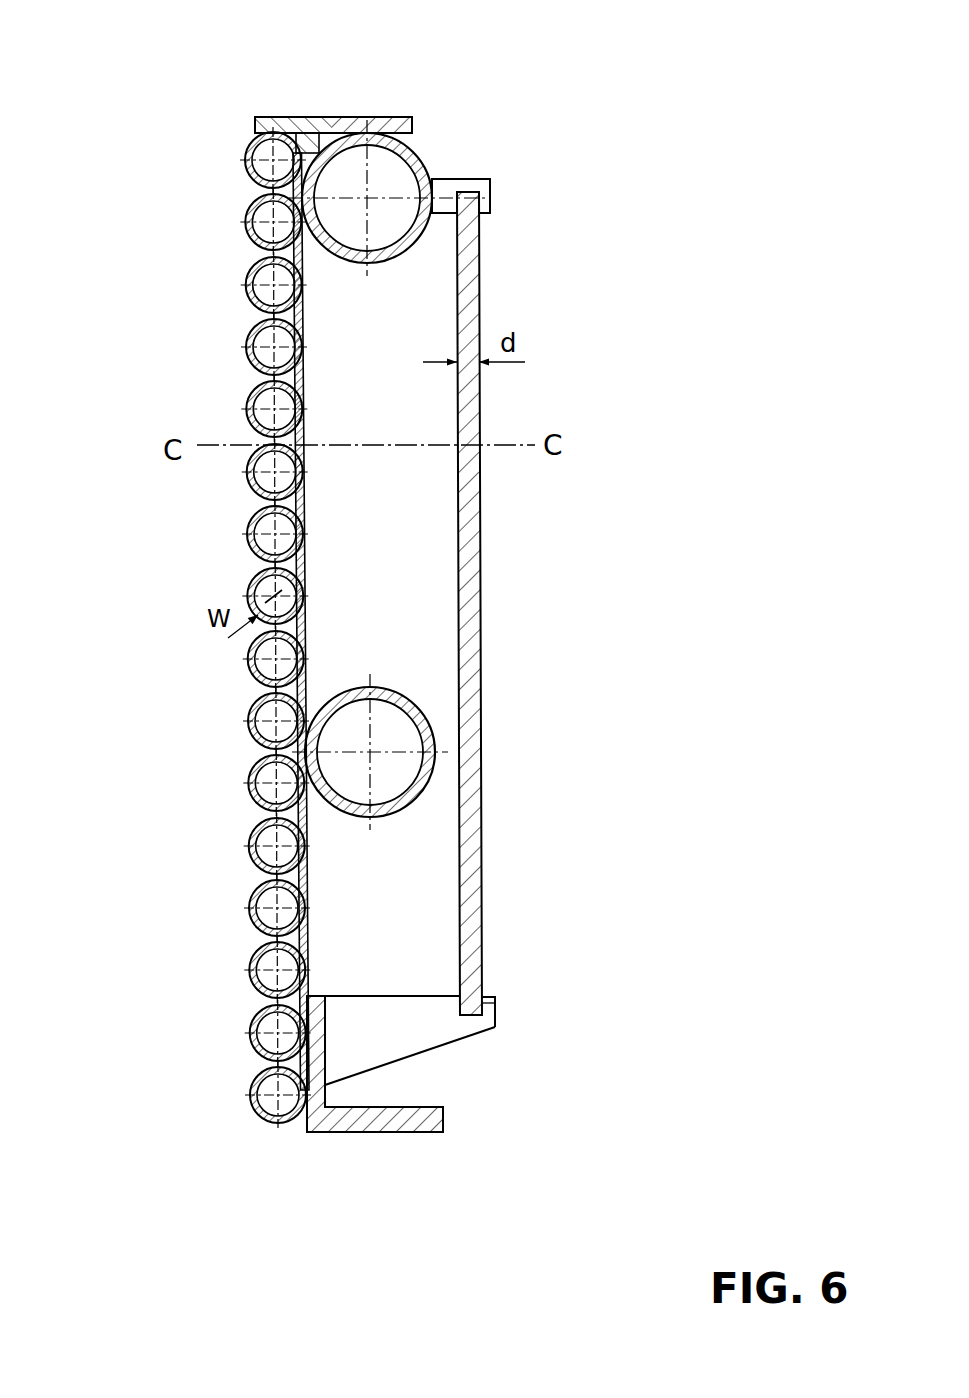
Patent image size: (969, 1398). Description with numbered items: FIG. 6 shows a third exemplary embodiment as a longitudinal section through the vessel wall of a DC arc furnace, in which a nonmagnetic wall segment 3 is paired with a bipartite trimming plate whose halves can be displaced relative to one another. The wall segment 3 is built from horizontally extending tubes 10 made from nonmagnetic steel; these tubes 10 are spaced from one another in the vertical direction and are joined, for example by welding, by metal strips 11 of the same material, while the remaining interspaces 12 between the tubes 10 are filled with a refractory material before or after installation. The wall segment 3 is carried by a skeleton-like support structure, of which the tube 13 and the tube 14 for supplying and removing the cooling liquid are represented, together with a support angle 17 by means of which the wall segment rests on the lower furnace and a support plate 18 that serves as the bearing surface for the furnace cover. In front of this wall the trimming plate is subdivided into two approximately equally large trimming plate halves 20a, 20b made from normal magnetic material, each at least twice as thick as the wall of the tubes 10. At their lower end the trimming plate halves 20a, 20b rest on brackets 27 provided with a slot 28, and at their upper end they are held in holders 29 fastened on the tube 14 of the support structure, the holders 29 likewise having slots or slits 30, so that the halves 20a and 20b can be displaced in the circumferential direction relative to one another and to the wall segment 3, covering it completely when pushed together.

The wall segment 3 is at (143, 685).
The tubes 10 is at (252, 543).
The metal strips 11 is at (305, 622).
The interspaces 12 is at (199, 627).
The tube 13 is at (425, 780).
The tube 14 is at (415, 158).
The support angle 17 is at (370, 1118).
The support plate 18 is at (320, 125).
The trimming plate half 20a is at (583, 603).
The trimming plate half 20b is at (468, 287).
The brackets 27 is at (405, 1025).
The slot 28 is at (485, 1002).
The holders 29 is at (530, 153).
The slots or slits 30 is at (490, 198).